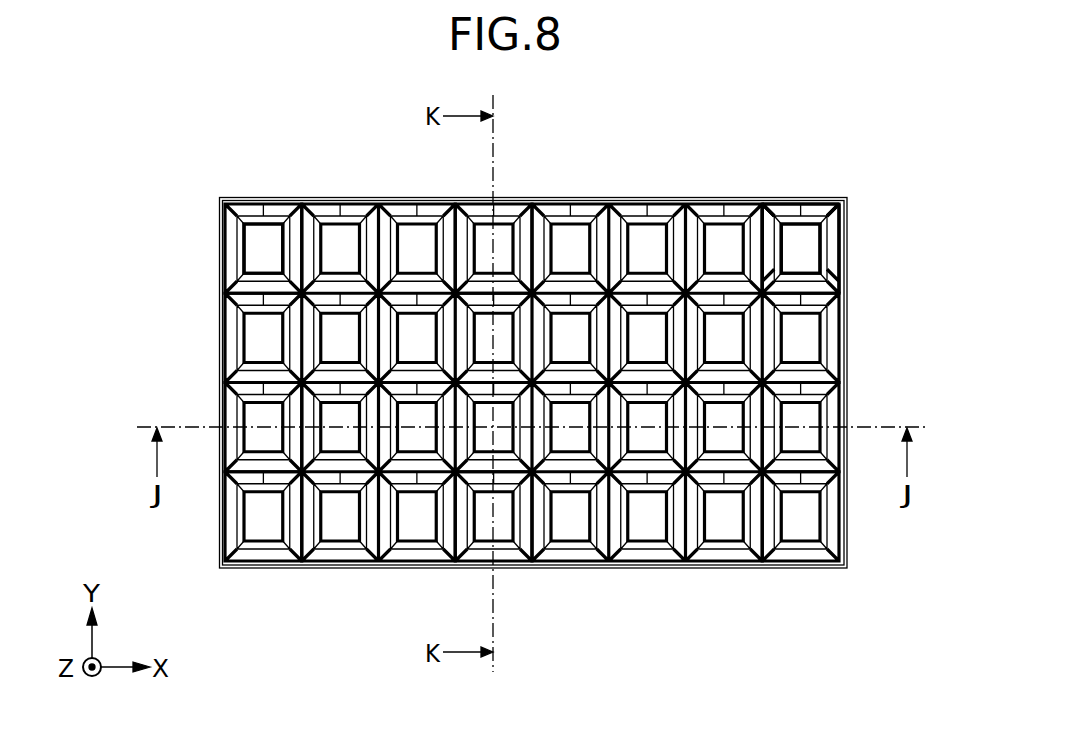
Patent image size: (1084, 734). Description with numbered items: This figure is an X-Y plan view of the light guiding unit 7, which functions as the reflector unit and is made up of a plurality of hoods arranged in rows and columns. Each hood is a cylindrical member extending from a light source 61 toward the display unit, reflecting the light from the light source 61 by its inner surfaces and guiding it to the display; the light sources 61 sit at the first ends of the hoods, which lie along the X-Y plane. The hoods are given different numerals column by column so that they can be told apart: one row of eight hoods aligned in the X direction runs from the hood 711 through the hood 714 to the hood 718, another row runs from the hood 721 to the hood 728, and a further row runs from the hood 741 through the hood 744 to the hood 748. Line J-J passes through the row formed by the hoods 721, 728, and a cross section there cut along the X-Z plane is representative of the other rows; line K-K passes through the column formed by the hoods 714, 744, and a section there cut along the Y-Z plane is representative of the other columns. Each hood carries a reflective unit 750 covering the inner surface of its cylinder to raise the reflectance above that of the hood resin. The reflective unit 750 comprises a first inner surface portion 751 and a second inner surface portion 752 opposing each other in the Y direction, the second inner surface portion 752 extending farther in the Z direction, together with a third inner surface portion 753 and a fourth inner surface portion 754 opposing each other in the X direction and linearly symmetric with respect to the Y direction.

The light guiding unit 7 is at (891, 211).
The light source 61 is at (263, 243).
The hood 711 is at (219, 526).
The hood 714 is at (518, 568).
The hood 718 is at (848, 532).
The hood 721 is at (219, 402).
The hood 728 is at (848, 407).
The hood 741 is at (219, 268).
The hood 744 is at (558, 162).
The hood 748 is at (848, 273).
The reflective unit 750 is at (805, 187).
The first inner surface portion 751 is at (798, 287).
The second inner surface portion 752 is at (785, 208).
The third inner surface portion 753 is at (768, 228).
The fourth inner surface portion 754 is at (864, 214).